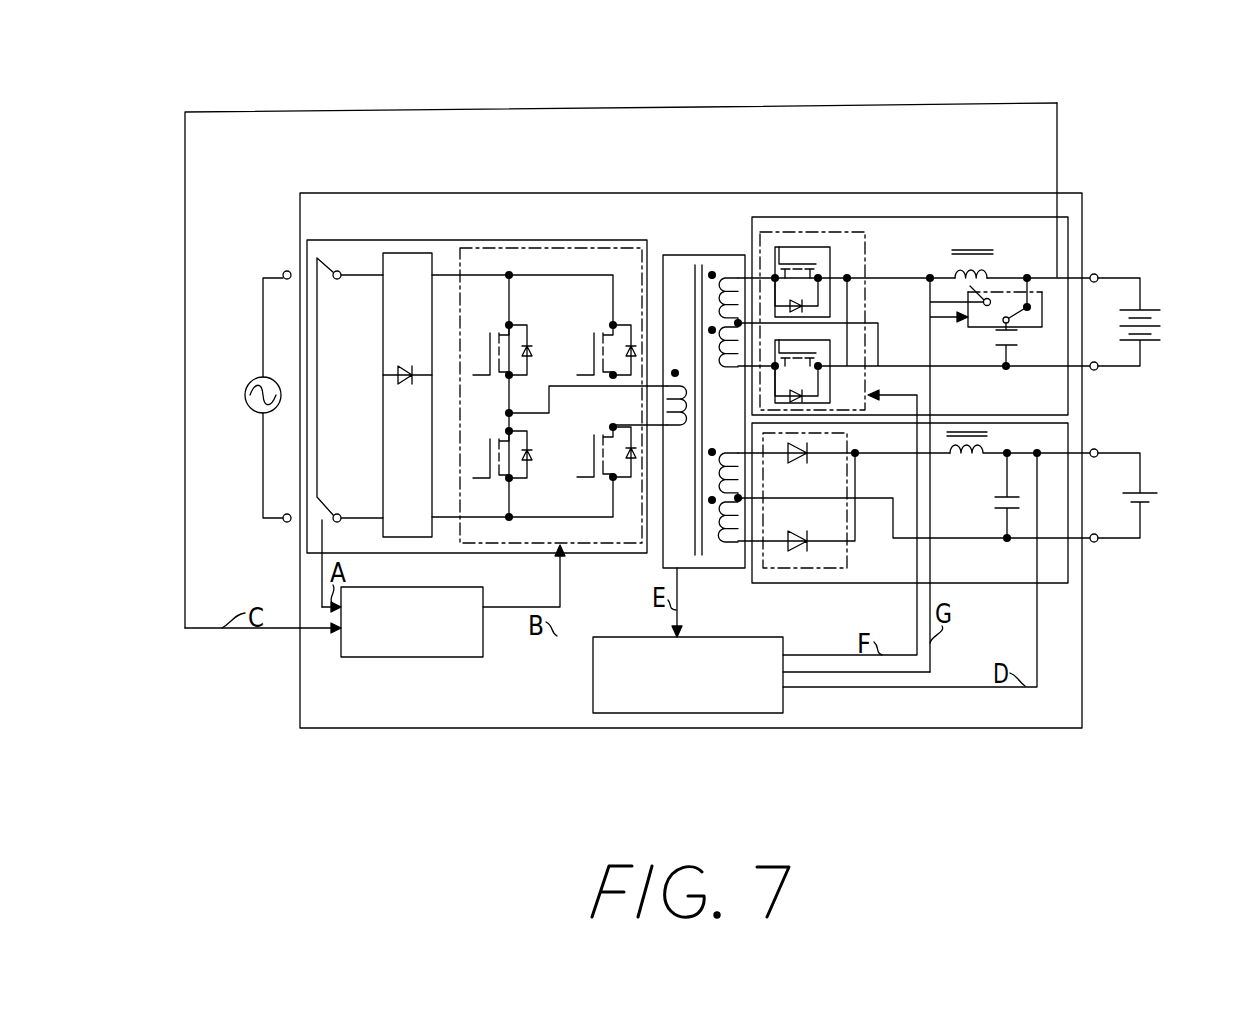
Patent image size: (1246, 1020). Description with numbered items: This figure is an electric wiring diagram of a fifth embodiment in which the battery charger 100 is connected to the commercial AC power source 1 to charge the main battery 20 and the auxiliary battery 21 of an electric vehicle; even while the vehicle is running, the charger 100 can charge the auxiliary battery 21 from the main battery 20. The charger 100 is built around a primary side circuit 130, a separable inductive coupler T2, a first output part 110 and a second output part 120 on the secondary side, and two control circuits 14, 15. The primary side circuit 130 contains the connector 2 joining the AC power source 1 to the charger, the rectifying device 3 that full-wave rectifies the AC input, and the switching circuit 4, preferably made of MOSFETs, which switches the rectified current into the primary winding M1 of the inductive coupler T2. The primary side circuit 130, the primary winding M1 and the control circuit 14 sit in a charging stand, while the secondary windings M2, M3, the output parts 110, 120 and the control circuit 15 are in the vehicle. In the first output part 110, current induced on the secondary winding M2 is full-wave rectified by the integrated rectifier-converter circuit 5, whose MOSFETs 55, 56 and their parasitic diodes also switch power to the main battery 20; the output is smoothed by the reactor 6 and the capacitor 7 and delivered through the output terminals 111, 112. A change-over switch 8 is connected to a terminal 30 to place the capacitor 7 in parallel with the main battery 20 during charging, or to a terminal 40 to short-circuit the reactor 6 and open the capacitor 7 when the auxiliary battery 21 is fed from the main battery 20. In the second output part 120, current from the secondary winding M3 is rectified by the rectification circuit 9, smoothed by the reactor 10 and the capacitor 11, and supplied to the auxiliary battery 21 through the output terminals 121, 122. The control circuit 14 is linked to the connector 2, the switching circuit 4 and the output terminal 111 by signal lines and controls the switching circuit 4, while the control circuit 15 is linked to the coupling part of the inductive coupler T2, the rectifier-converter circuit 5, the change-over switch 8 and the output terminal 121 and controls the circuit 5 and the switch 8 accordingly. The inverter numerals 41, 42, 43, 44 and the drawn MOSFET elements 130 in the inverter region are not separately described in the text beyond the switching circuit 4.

The battery charger 100 is at (298, 205).
The commercial AC power source 1 is at (246, 390).
The connector 2 is at (337, 272).
The rectifying device 3 is at (403, 253).
The switching circuit 4 is at (448, 240).
The inverter 41 is at (477, 248).
The primary side circuit 130 is at (507, 323).
The switching element 42 is at (612, 323).
The switching element 43 is at (473, 480).
The switching element 44 is at (590, 482).
The separable inductive coupler T2 is at (675, 255).
The primary winding M1 is at (671, 427).
The secondary winding M2 is at (736, 278).
The secondary winding M3 is at (736, 545).
The integrated rectifier-converter circuit 5 is at (787, 232).
The MOSFET 55 is at (768, 256).
The MOSFET 56 is at (823, 342).
The terminal 40 is at (968, 286).
The reactor 6 is at (972, 250).
The first output part 110 is at (1008, 217).
The change-over switch 8 is at (1043, 312).
The output terminal 111 is at (1097, 275).
The output terminal 112 is at (1098, 366).
The main battery 20 is at (1161, 322).
The capacitor 7 is at (1025, 340).
The terminal 30 is at (995, 340).
The output terminal 121 is at (1098, 453).
The output terminal 122 is at (1098, 538).
The auxiliary battery 21 is at (1143, 490).
The second output part 120 is at (1070, 568).
The rectification circuit 9 is at (785, 570).
The reactor 10 is at (965, 460).
The capacitor 11 is at (1009, 510).
The control circuit 14 is at (383, 658).
The control circuit 15 is at (733, 713).